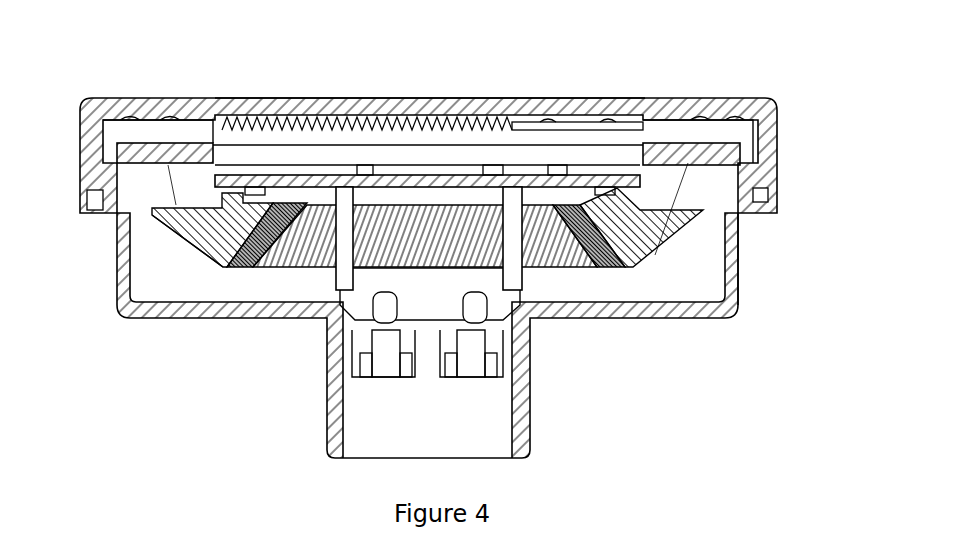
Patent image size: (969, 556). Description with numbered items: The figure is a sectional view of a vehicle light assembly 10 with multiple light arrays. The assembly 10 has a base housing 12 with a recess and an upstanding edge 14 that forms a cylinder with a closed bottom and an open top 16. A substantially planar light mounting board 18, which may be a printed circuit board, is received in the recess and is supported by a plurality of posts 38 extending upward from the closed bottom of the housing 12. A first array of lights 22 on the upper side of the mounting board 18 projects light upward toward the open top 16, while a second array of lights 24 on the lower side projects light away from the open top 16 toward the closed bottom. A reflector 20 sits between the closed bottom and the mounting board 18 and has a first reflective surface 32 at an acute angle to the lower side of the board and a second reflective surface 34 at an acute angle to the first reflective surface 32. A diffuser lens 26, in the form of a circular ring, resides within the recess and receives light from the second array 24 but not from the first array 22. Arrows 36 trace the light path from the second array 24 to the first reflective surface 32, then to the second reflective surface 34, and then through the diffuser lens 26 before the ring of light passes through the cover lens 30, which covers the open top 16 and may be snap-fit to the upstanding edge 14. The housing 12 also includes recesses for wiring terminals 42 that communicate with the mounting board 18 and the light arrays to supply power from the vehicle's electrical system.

The vehicle light assembly 10 is at (795, 293).
The base housing 12 is at (709, 330).
The upstanding edge 14 is at (738, 243).
The open top 16 is at (708, 195).
The light mounting board 18 is at (528, 177).
The reflector 20 is at (220, 247).
The first array of lights 22 is at (300, 165).
The second array of lights 24 is at (255, 188).
The diffuser lens 26 is at (675, 148).
The cover lens 30 is at (432, 100).
The first reflective surface 32 is at (192, 240).
The second reflective surface 34 is at (250, 267).
The arrows 36 is at (680, 201).
The posts 38 is at (340, 270).
The wiring terminals 42 is at (385, 360).